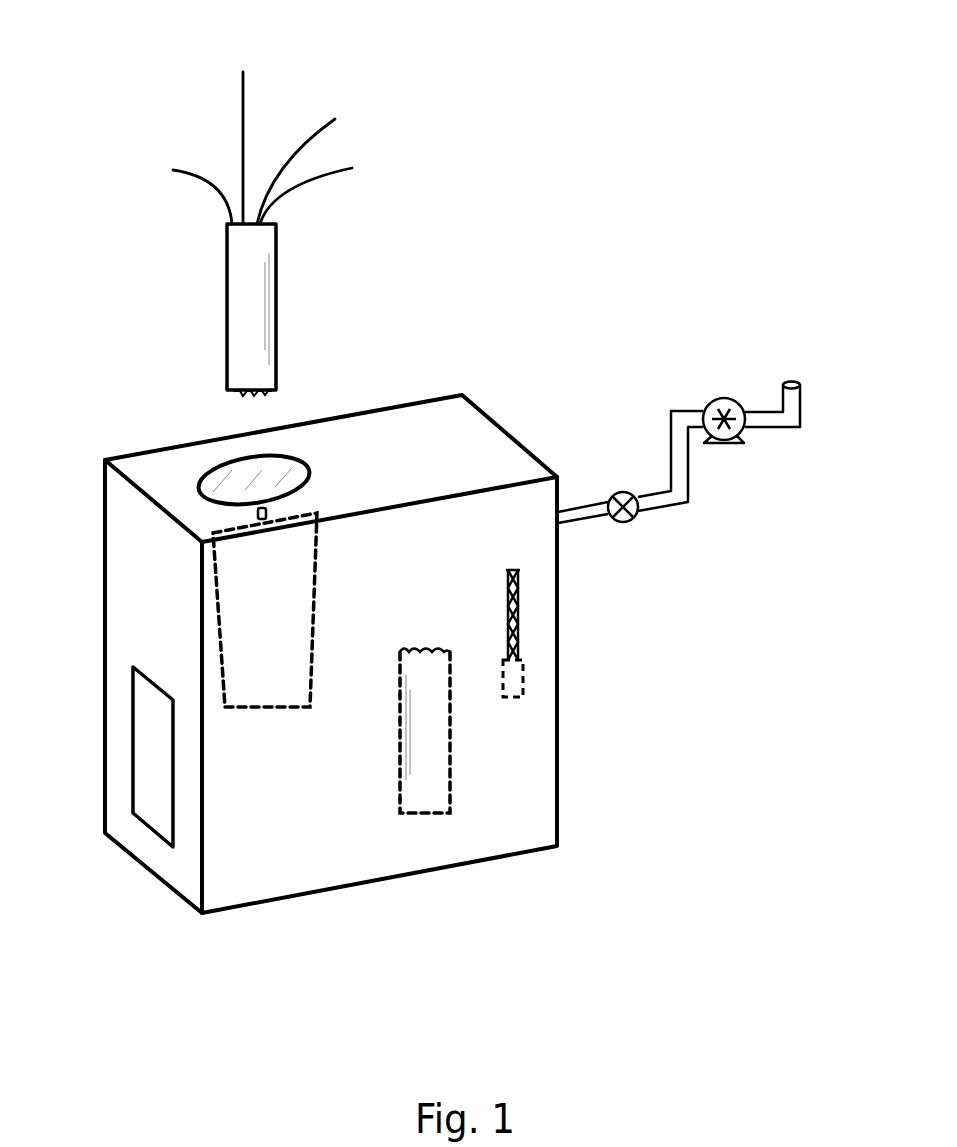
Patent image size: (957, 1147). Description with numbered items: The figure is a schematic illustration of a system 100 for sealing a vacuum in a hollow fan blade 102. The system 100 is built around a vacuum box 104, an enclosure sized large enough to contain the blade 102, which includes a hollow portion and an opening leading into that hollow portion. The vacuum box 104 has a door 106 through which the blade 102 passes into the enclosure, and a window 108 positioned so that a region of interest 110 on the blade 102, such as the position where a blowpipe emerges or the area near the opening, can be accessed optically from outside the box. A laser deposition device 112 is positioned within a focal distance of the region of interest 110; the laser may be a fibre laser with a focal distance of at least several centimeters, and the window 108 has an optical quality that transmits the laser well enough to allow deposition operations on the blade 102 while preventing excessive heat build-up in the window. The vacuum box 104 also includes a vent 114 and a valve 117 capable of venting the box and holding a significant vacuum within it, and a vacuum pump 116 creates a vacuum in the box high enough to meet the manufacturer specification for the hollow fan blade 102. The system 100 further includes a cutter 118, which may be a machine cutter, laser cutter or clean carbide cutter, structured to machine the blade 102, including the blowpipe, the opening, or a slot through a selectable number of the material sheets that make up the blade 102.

The system 100 is at (120, 55).
The hollow fan blade 102 is at (280, 710).
The vacuum box 104 is at (558, 765).
The door 106 is at (133, 708).
The window 108 is at (218, 462).
The region of interest 110 is at (266, 511).
The laser deposition device 112 is at (227, 300).
The vent 114 is at (790, 381).
The vacuum pump 116 is at (724, 398).
The valve 117 is at (623, 492).
The cutter 118 is at (523, 662).